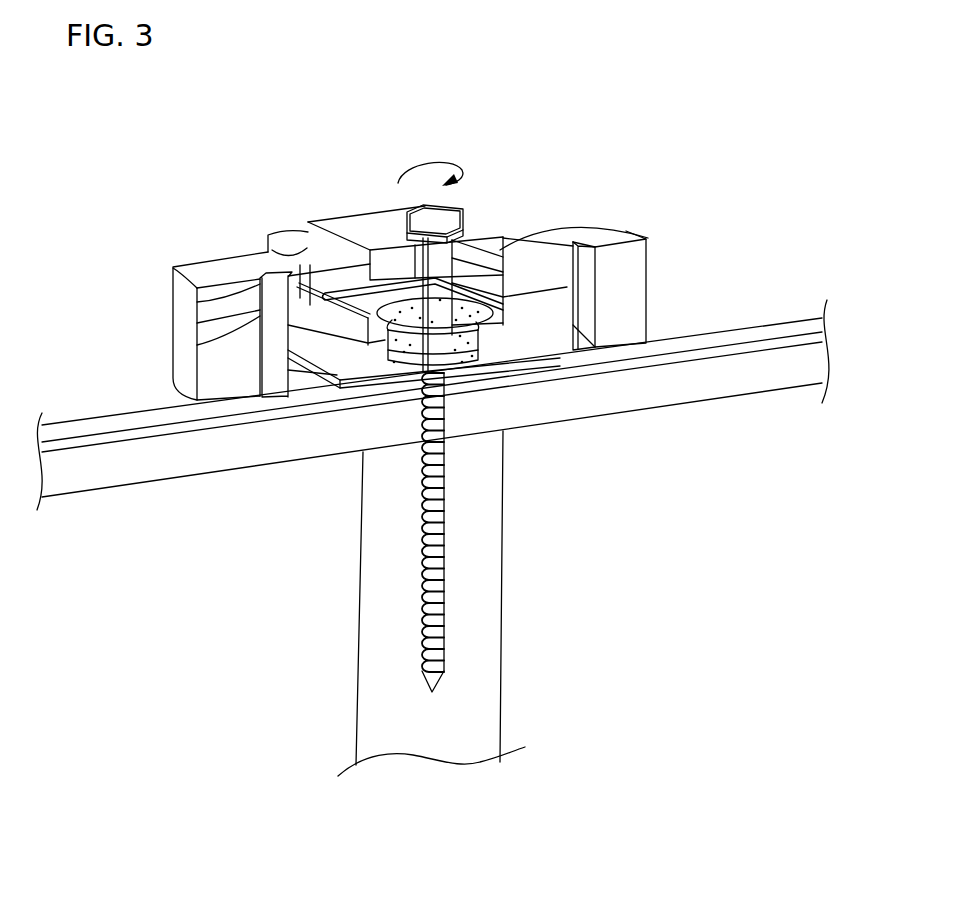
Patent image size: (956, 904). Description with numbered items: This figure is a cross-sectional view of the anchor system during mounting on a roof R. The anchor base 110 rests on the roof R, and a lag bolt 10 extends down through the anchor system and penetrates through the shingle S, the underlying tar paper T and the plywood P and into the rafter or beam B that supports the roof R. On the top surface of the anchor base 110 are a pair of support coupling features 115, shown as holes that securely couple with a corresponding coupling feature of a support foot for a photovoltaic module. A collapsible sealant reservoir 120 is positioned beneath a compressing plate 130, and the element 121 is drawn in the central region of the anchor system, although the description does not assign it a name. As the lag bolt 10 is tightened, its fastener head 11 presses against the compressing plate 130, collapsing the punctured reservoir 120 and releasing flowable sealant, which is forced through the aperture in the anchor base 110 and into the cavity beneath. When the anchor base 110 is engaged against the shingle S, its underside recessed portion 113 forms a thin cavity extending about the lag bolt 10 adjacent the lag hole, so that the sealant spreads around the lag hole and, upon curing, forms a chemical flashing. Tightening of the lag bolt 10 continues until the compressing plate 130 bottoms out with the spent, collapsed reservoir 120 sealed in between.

The lag bolt 10 is at (443, 513).
The fastener head 11 is at (445, 220).
The anchor base 110 is at (200, 275).
The recessed portion 113 is at (322, 381).
The support coupling features 115 is at (262, 279).
The collapsible sealant reservoir 120 is at (338, 295).
The nozzle cup 121 is at (460, 307).
The compressing plate 130 is at (357, 228).
The rafter or beam B is at (487, 548).
The roof R is at (75, 412).
The shingle S is at (703, 338).
The tar paper T is at (732, 350).
The plywood P is at (765, 362).